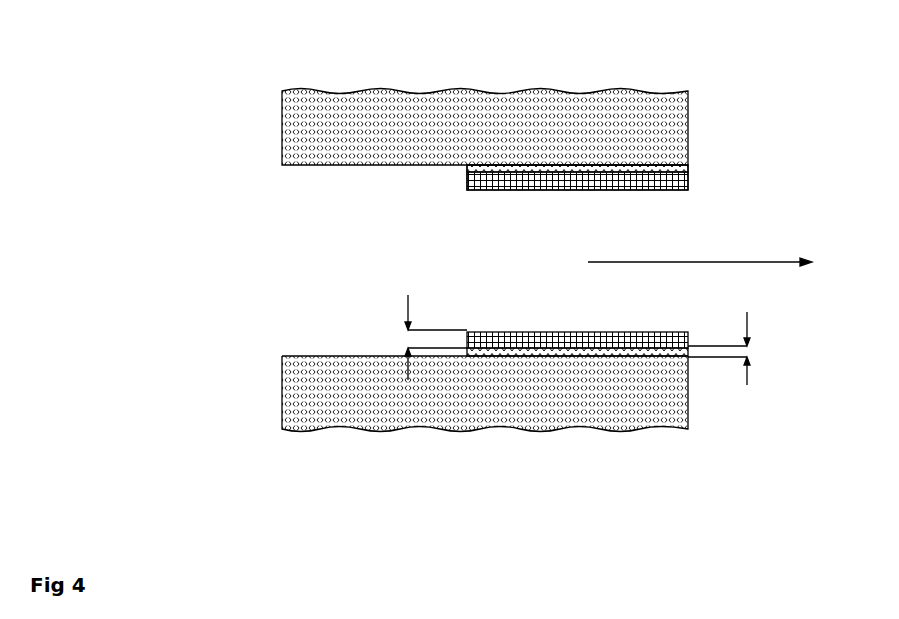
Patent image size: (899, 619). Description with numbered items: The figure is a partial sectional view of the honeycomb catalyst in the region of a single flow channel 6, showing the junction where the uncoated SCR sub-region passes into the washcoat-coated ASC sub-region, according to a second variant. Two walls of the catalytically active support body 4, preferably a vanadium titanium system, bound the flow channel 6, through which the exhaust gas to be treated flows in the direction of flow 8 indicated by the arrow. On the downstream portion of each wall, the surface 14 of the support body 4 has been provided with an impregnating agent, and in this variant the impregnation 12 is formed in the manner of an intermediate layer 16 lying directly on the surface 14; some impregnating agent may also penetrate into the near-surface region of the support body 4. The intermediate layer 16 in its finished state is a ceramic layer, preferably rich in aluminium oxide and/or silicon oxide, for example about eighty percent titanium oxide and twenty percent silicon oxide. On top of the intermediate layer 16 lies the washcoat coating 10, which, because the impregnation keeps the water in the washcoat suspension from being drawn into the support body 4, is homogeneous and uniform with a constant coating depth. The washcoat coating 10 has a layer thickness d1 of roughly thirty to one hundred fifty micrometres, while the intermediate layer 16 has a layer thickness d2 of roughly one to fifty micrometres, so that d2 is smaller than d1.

The support body 4 is at (300, 417).
The flow channel 6 is at (345, 188).
The direction of flow 8 is at (712, 262).
The washcoat coating 10 is at (648, 188).
The impregnation 12 is at (597, 187).
The surface of the support body 14 is at (356, 357).
The intermediate layer 16 is at (636, 167).
The layer thickness of the washcoat coating d1 is at (408, 305).
The layer thickness of the intermediate layer d2 is at (748, 318).